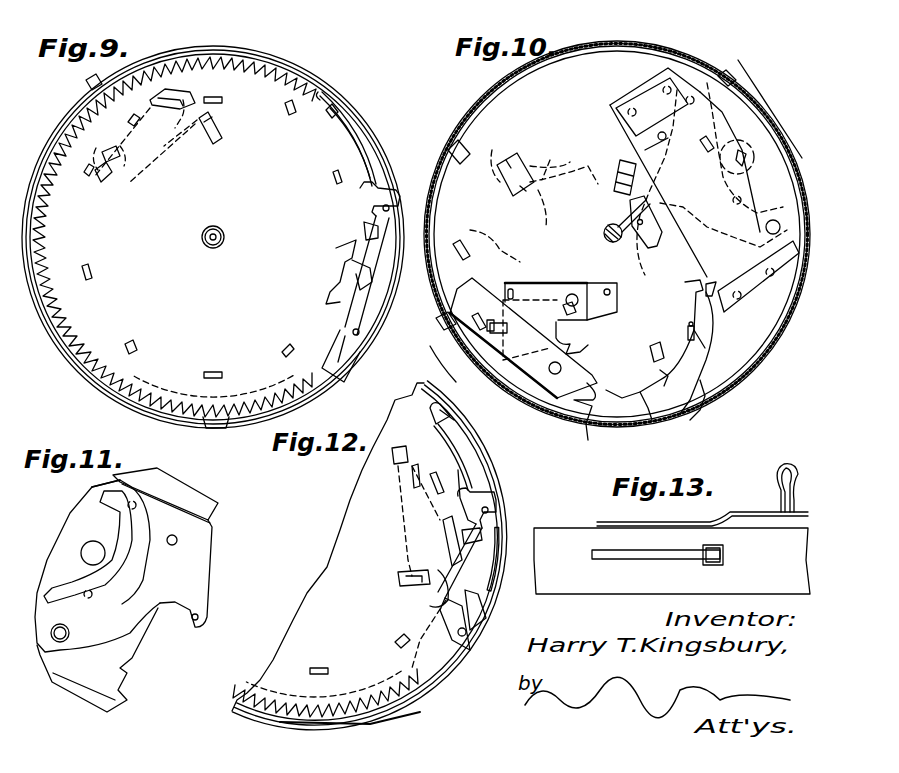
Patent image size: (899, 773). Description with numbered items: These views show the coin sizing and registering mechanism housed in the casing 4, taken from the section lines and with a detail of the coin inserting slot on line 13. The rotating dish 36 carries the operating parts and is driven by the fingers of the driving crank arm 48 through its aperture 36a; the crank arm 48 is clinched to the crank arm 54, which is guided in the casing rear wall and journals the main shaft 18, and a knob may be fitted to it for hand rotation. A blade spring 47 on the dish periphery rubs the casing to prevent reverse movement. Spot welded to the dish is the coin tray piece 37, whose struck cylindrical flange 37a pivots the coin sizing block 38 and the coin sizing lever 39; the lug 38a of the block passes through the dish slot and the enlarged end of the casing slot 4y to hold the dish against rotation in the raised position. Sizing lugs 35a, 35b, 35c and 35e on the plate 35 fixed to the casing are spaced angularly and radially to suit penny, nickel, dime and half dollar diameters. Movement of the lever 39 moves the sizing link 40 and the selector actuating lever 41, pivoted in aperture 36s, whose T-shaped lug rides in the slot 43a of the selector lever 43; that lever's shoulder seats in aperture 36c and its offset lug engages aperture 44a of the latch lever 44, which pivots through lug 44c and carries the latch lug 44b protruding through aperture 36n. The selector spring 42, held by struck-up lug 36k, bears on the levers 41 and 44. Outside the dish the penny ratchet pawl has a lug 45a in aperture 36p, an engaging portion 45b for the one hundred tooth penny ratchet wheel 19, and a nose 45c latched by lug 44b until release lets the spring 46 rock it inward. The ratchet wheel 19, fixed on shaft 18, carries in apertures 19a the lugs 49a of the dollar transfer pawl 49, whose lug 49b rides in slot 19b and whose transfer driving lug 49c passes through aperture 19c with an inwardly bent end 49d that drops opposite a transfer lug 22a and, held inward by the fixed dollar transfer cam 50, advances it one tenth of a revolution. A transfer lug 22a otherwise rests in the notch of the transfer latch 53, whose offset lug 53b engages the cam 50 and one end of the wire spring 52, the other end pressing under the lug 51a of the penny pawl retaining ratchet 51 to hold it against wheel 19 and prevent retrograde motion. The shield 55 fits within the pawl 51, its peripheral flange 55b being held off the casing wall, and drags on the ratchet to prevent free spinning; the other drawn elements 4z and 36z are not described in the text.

In FIG. 9, the casing 4 is at (318, 72).
In FIG. 10, the casing 4 is at (668, 44).
In FIG. 12, the casing 4 is at (494, 474).
In FIG. 13, the casing 4 is at (546, 534).
In FIG. 10, the slot in casing 4y is at (766, 120).
In FIG. 13, the slot in casing 4y is at (630, 554).
In FIG. 13, the casing plate 4z is at (708, 540).
In FIG. 10, the section line 13 is at (722, 30).
In FIG. 9, the main shaft 18 is at (216, 226).
In FIG. 10, the main shaft 18 is at (606, 226).
In FIG. 9, the penny ratchet wheel 19 is at (240, 82).
In FIG. 12, the penny ratchet wheel 19 is at (352, 520).
In FIG. 9, the apertures of penny ratchet wheel 19a is at (110, 180).
In FIG. 9, the slot of penny ratchet wheel 19b is at (218, 140).
In FIG. 9, the aperture of penny ratchet wheel 19c is at (182, 96).
In FIG. 9, the transfer lug 22a is at (288, 116).
In FIG. 10, the plate 35 is at (706, 210).
In FIG. 10, the sizing lug 35a is at (660, 108).
In FIG. 10, the sizing lug 35b is at (708, 140).
In FIG. 10, the sizing lug 35c is at (744, 166).
In FIG. 10, the sizing lug 35e is at (562, 302).
In FIG. 10, the dish 36 is at (500, 76).
In FIG. 10, the aperture of dish 36a is at (500, 162).
In FIG. 10, the aperture of dish 36c is at (442, 328).
In FIG. 10, the struck-up lug of dish 36k is at (618, 162).
In FIG. 10, the aperture of dish 36n is at (650, 418).
In FIG. 10, the aperture of dish 36p is at (466, 248).
In FIG. 10, the aperture of dish 36s is at (580, 334).
In FIG. 10, the lug 36z is at (742, 104).
In FIG. 10, the coin tray piece 37 is at (780, 296).
In FIG. 11, the coin tray piece 37 is at (130, 640).
In FIG. 11, the cylindrical flange 37a is at (62, 645).
In FIG. 11, the coin sizing block 38 is at (130, 528).
In FIG. 9, the lug of coin sizing block 38a is at (90, 80).
In FIG. 10, the lug of coin sizing block 38a is at (724, 76).
In FIG. 11, the lug of coin sizing block 38a is at (118, 481).
In FIG. 13, the lug of coin sizing block 38a is at (722, 556).
In FIG. 10, the coin sizing lever 39 is at (645, 196).
In FIG. 11, the coin sizing lever 39 is at (185, 590).
In FIG. 13, the coin sizing lever 39 is at (724, 550).
In FIG. 10, the sizing link 40 is at (632, 250).
In FIG. 10, the selector actuating lever 41 is at (600, 306).
In FIG. 10, the selector spring 42 is at (508, 288).
In FIG. 10, the selector lever 43 is at (524, 332).
In FIG. 10, the slot of selector lever 43a is at (498, 322).
In FIG. 10, the latch lever 44 is at (704, 396).
In FIG. 10, the aperture of latch lever 44a is at (588, 416).
In FIG. 10, the latch lug 44b is at (696, 352).
In FIG. 10, the lug of latch lever 44c is at (692, 286).
In FIG. 10, the lug of penny ratchet pawl 45a is at (450, 246).
In FIG. 9, the engaging portion of penny ratchet pawl 45b is at (228, 428).
In FIG. 10, the engaging portion of penny ratchet pawl 45b is at (632, 0).
In FIG. 10, the nose of penny ratchet pawl 45c is at (446, 300).
In FIG. 10, the spring of penny ratchet pawl 46 is at (648, 376).
In FIG. 9, the blade spring 47 is at (210, 427).
In FIG. 10, the blade spring 47 is at (620, 426).
In FIG. 10, the driving crank arm 48 is at (564, 164).
In FIG. 9, the dollar transfer pawl 49 is at (176, 146).
In FIG. 12, the dollar transfer pawl 49 is at (400, 532).
In FIG. 9, the lugs of dollar transfer pawl 49a is at (103, 170).
In FIG. 9, the lug of dollar transfer pawl 49b is at (214, 122).
In FIG. 9, the transfer driving lug 49c is at (166, 88).
In FIG. 9, the inwardly bent end 49d is at (138, 114).
In FIG. 9, the dollar transfer cam 50 is at (396, 196).
In FIG. 12, the dollar transfer cam 50 is at (466, 652).
In FIG. 9, the penny pawl retaining ratchet 51 is at (362, 134).
In FIG. 10, the penny pawl retaining ratchet 51 is at (466, 390).
In FIG. 12, the penny pawl retaining ratchet 51 is at (472, 446).
In FIG. 12, the outwardly extending lug 51a is at (430, 418).
In FIG. 9, the wire spring 52 is at (364, 152).
In FIG. 12, the wire spring 52 is at (470, 636).
In FIG. 9, the transfer latch 53 is at (342, 246).
In FIG. 12, the transfer latch 53 is at (480, 588).
In FIG. 12, the offset lug of transfer latch 53b is at (436, 640).
In FIG. 13, the crank arm 54 is at (760, 510).
In FIG. 12, the shield 55 is at (392, 686).
In FIG. 12, the peripheral flange of shield 55b is at (400, 712).